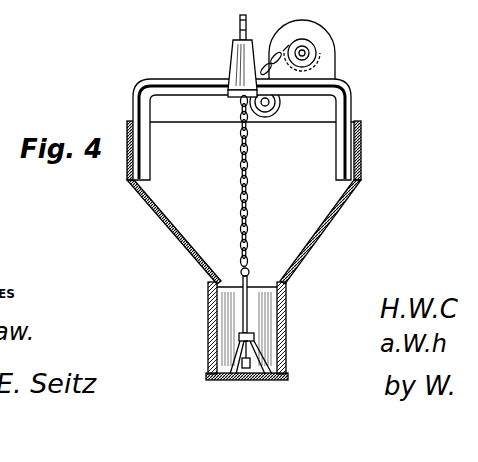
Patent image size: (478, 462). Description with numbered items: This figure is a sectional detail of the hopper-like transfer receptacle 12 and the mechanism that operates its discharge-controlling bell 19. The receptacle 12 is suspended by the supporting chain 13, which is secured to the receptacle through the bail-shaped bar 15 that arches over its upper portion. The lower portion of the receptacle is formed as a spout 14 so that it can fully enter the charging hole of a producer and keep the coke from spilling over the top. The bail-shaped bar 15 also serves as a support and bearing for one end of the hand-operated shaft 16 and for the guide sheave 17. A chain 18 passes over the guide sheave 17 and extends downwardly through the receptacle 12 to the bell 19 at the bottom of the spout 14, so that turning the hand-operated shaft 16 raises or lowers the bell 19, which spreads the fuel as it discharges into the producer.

The transfer receptacle 12 is at (166, 227).
The chain 13 is at (238, 22).
The lower portion 14 is at (209, 320).
The bail-shaped bar 15 is at (193, 80).
The hand-operated shaft 16 is at (322, 50).
The guide sheave 17 is at (283, 107).
The chain 18 is at (250, 201).
The bell 19 is at (212, 353).